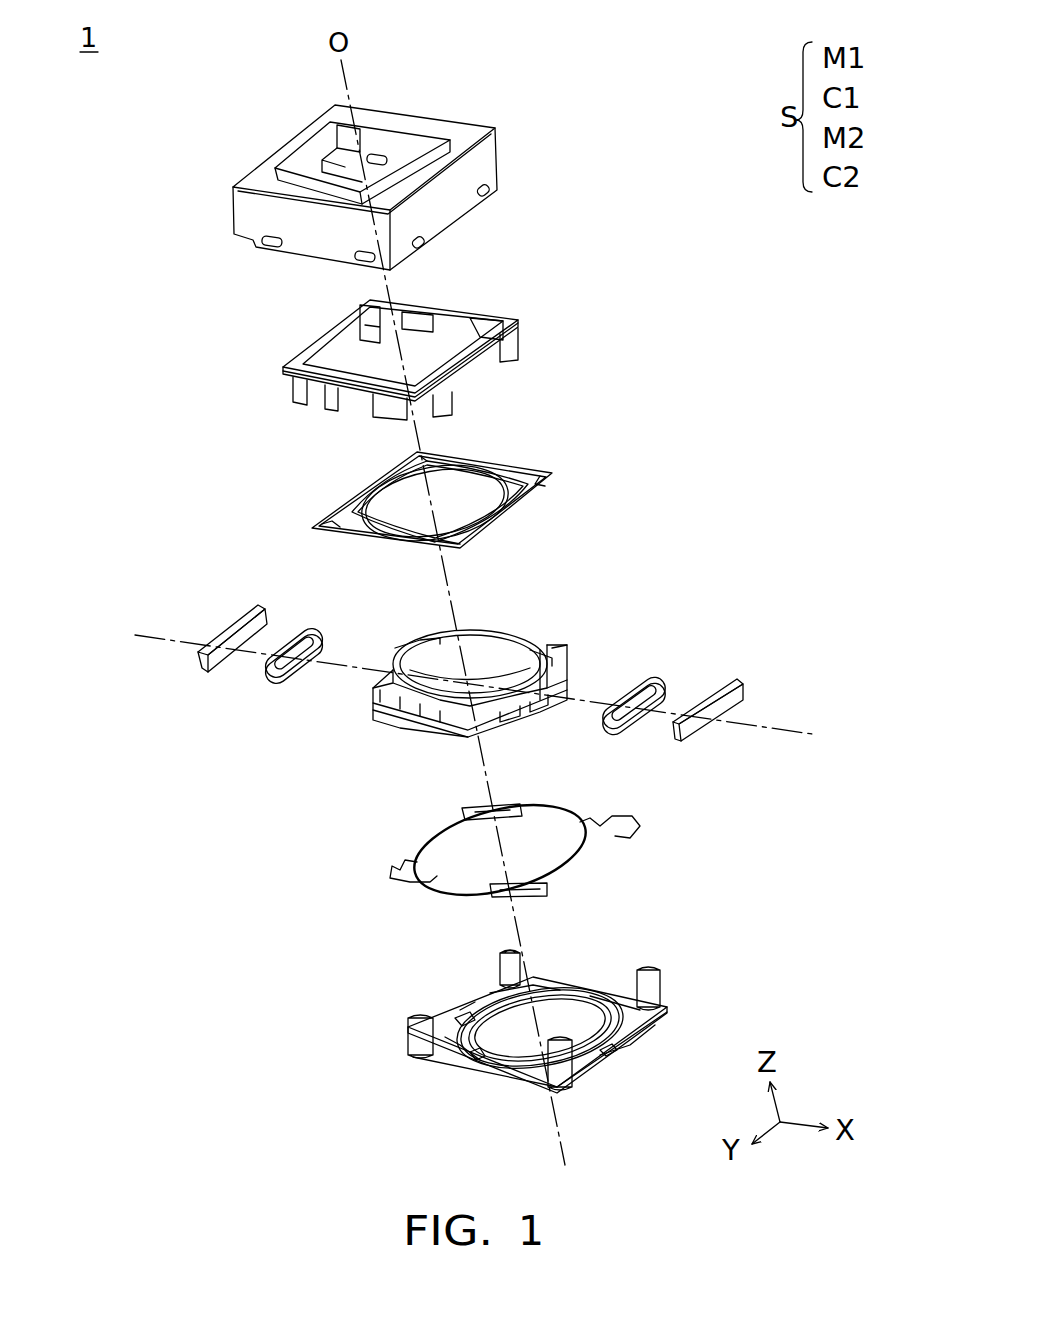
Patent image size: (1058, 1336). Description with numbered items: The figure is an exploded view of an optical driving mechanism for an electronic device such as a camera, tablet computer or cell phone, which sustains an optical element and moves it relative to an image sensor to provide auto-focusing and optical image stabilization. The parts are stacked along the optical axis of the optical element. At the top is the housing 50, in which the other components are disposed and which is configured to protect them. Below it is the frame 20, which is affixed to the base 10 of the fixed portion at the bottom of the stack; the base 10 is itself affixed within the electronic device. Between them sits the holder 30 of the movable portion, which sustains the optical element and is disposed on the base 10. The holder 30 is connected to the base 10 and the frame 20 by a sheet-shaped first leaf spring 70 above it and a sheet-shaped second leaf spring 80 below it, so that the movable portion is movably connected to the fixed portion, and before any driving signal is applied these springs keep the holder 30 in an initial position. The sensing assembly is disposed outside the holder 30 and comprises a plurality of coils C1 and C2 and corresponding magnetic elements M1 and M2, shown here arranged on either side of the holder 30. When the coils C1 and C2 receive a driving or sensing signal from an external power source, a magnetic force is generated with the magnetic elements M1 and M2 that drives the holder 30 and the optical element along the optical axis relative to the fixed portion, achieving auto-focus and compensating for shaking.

The base 10 is at (665, 995).
The frame 20 is at (523, 320).
The holder 30 is at (508, 635).
The housing 50 is at (503, 157).
The first leaf spring 70 is at (555, 472).
The second leaf spring 80 is at (618, 830).
The magnetic element M1 is at (742, 677).
The magnetic element M2 is at (235, 607).
The coil C1 is at (650, 680).
The coil C2 is at (303, 633).